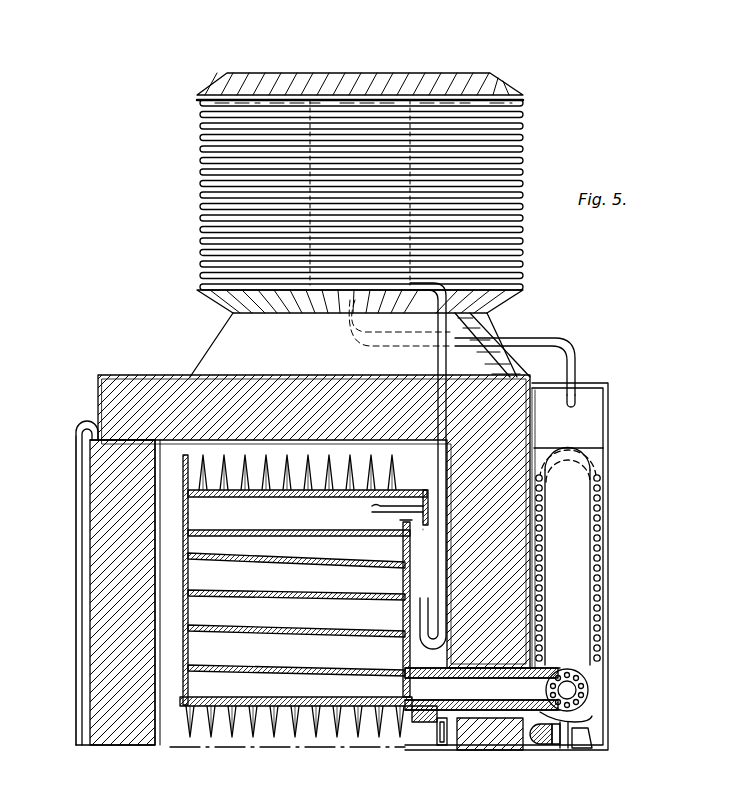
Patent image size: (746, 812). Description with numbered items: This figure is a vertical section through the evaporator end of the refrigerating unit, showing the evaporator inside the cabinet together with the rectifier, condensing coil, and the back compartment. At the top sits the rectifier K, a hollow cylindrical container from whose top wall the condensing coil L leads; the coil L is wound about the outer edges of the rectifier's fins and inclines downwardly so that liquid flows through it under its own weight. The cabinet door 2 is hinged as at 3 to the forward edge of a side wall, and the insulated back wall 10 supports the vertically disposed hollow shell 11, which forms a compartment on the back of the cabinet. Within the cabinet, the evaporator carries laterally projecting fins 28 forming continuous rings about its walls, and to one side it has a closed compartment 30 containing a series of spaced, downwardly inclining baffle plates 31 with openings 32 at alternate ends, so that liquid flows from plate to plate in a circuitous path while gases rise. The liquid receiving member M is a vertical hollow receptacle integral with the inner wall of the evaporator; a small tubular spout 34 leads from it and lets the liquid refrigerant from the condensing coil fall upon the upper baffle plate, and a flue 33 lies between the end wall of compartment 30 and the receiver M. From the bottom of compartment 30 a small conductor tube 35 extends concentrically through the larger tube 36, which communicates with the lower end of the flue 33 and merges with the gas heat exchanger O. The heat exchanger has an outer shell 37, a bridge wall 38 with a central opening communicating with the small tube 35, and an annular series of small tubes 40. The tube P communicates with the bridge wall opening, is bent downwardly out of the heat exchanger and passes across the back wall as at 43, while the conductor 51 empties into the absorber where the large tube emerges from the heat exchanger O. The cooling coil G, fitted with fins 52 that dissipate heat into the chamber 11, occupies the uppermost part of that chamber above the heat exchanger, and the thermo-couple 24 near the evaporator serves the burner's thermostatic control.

The rectifier K is at (340, 100).
The condensing coil L is at (525, 142).
The hinge connection 3 is at (540, 345).
The liquid receiving member M is at (438, 607).
The door 2 is at (82, 701).
The fins 28 is at (398, 463).
The closed compartment 30 is at (305, 513).
The baffle plates 31 is at (262, 556).
The openings 32 is at (201, 537).
The flue 33 is at (403, 580).
The tubular spout 34 is at (372, 513).
The small conductor tube 35 is at (410, 712).
The larger tube 36 is at (430, 724).
The outer shell 37 is at (397, 565).
The thermo-couple 24 is at (442, 746).
The back wall 10 is at (490, 742).
The hollow shell 11 is at (609, 420).
The fins 52 is at (600, 464).
The cooling coil G is at (602, 528).
The gas heat exchanger O is at (578, 704).
The small tubes 40 is at (586, 683).
The bridge wall 38 is at (590, 689).
The conductor 51 is at (590, 723).
The section of tube P 43 is at (545, 746).
The tube P is at (558, 748).